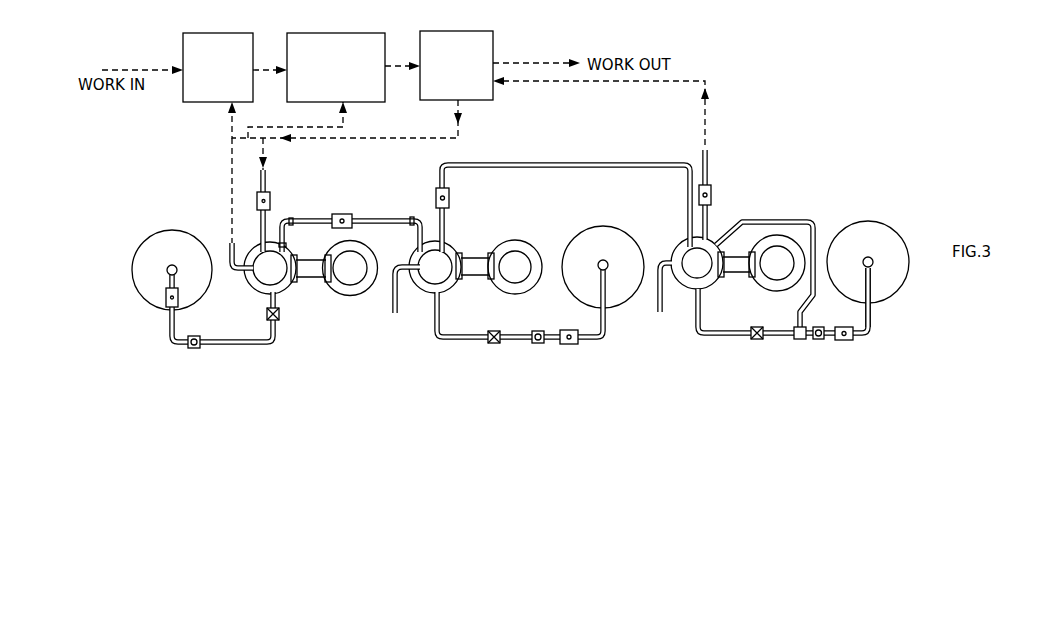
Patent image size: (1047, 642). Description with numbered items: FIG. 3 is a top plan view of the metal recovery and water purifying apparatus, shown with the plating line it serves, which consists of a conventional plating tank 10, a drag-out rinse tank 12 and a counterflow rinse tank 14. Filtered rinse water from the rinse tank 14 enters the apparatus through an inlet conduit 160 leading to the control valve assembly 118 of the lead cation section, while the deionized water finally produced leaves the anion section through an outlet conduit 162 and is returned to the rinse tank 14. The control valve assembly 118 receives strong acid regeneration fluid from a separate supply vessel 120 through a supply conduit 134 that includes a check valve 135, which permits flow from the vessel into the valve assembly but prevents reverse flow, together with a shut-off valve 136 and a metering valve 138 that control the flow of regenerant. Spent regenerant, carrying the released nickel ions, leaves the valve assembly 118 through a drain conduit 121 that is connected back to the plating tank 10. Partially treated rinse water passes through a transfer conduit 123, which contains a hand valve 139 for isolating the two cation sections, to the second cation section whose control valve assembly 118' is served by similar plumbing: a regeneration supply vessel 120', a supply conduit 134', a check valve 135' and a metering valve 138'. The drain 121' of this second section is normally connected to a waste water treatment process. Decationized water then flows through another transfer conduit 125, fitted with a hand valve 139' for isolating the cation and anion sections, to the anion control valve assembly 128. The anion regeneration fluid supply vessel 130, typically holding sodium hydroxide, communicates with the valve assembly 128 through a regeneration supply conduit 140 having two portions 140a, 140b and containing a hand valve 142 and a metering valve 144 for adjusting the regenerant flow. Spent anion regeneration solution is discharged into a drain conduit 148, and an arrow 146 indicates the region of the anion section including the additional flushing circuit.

The plating tank 10 is at (213, 33).
The drag-out rinse tank 12 is at (318, 33).
The counterflow rinse tank 14 is at (455, 31).
The control valve assembly 118 is at (311, 268).
The control valve assembly 118' is at (493, 247).
The cation regeneration fluid supply vessel 120 is at (162, 250).
The cation regeneration fluid supply vessel 120' is at (611, 252).
The drain conduit 121 is at (214, 203).
The drain conduit 121' is at (387, 315).
The transfer conduit 123 is at (313, 215).
The transfer conduit 125 is at (545, 162).
The anion control valve assembly 128 is at (700, 255).
The anion regeneration fluid supply vessel 130 is at (862, 230).
The supply conduit 134 is at (235, 325).
The supply conduit 134' is at (522, 318).
The check valve 135 is at (211, 356).
The check valve 135' is at (541, 324).
The shut-off valve 136 is at (162, 297).
The metering valve 138 is at (300, 319).
The metering valve 138' is at (541, 349).
The hand valve 139 is at (372, 199).
The hand valve 139' is at (482, 198).
The regeneration supply conduit 140 is at (790, 345).
The conduit portion 140a is at (695, 320).
The conduit portion 140b is at (875, 315).
The hand valve 142 is at (855, 338).
The metering valve 144 is at (757, 340).
The recirculation system 146 is at (817, 196).
The drain conduit 148 is at (657, 300).
The inlet conduit 160 is at (267, 182).
The outlet conduit 162 is at (708, 155).